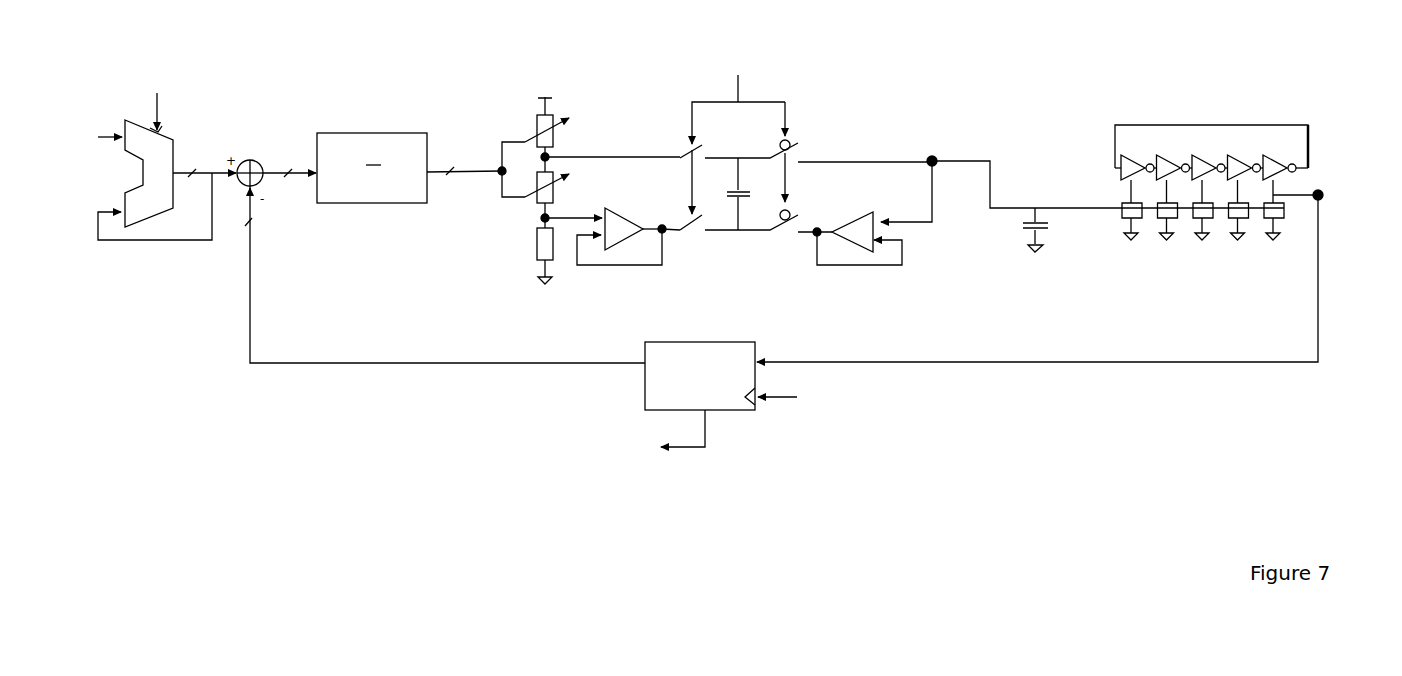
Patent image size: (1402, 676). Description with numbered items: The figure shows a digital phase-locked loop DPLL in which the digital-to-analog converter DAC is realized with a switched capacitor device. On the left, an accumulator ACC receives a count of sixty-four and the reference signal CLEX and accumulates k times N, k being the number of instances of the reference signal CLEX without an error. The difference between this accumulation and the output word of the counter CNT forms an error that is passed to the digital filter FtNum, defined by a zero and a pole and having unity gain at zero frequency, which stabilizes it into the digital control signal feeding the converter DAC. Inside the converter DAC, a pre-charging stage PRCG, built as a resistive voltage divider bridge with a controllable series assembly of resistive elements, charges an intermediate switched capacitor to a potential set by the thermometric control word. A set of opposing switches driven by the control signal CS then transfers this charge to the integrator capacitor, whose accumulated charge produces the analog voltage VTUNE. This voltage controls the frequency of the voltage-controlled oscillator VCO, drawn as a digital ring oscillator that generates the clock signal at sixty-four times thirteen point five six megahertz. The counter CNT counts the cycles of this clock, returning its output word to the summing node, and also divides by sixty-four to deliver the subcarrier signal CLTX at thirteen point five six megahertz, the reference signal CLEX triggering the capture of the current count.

The accumulator ACC is at (152, 262).
The reference signal CLEX is at (489, 240).
The digital filter FtNum is at (342, 204).
The digital-to-analog converter DAC is at (647, 126).
The pre-charging stage PRCG is at (523, 122).
The control signal CS is at (739, 141).
The digital phase-locked loop DPLL is at (911, 97).
The analog voltage control signal VTUNE is at (1055, 205).
The voltage-controlled oscillator VCO is at (1322, 136).
The counter CNT is at (981, 302).
The subcarrier signal CLTX is at (687, 450).